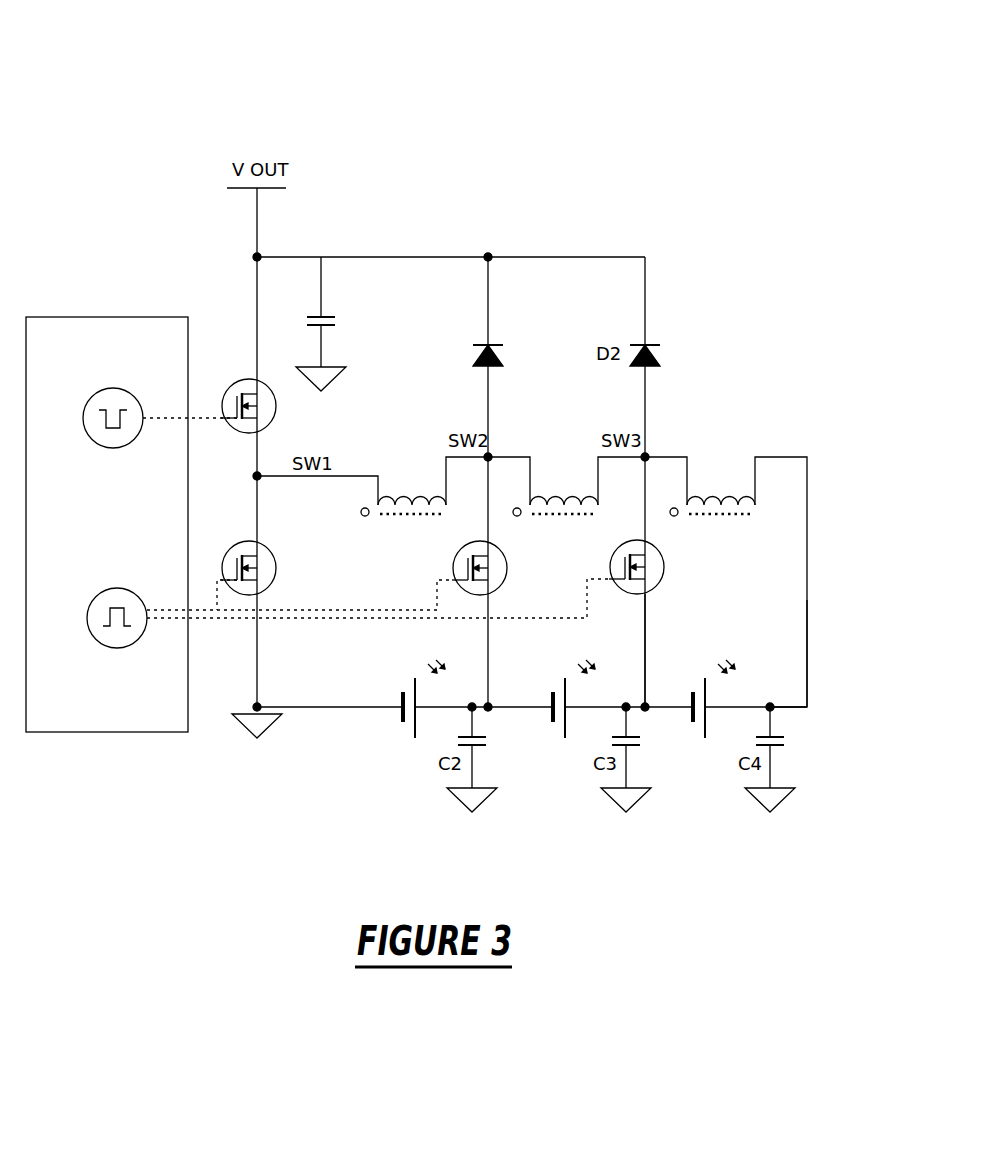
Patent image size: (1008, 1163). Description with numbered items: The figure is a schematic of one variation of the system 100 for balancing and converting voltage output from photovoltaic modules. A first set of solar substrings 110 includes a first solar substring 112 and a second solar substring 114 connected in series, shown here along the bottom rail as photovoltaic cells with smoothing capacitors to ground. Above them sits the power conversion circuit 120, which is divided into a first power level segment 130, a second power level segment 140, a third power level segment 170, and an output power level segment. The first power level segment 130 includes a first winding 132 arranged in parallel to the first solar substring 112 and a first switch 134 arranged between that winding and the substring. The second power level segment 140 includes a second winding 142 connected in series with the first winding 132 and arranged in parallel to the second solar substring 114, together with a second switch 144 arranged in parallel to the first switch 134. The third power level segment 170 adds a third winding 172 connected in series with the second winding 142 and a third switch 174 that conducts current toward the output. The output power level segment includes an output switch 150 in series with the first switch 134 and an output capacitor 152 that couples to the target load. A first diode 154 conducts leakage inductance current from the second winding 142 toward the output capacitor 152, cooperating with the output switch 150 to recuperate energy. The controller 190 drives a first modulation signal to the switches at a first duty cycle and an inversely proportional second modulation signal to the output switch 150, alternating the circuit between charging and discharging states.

The system 100 is at (173, 84).
The controller 190 is at (143, 317).
The output switch 150 is at (249, 380).
The output capacitor 152 is at (327, 315).
The first diode 154 is at (504, 356).
The second switch 144 is at (440, 500).
The second winding 142 is at (566, 500).
The third winding 172 is at (723, 500).
The power conversion circuit 120 is at (547, 538).
The first switch 134 is at (238, 545).
The first winding 132 is at (383, 514).
The third switch 174 is at (664, 568).
The first power level segment 130 is at (489, 630).
The second power level segment 140 is at (646, 627).
The third power level segment 170 is at (808, 655).
The first solar substring 112 is at (404, 724).
The second solar substring 114 is at (554, 724).
The first set of solar substrings 110 is at (694, 724).